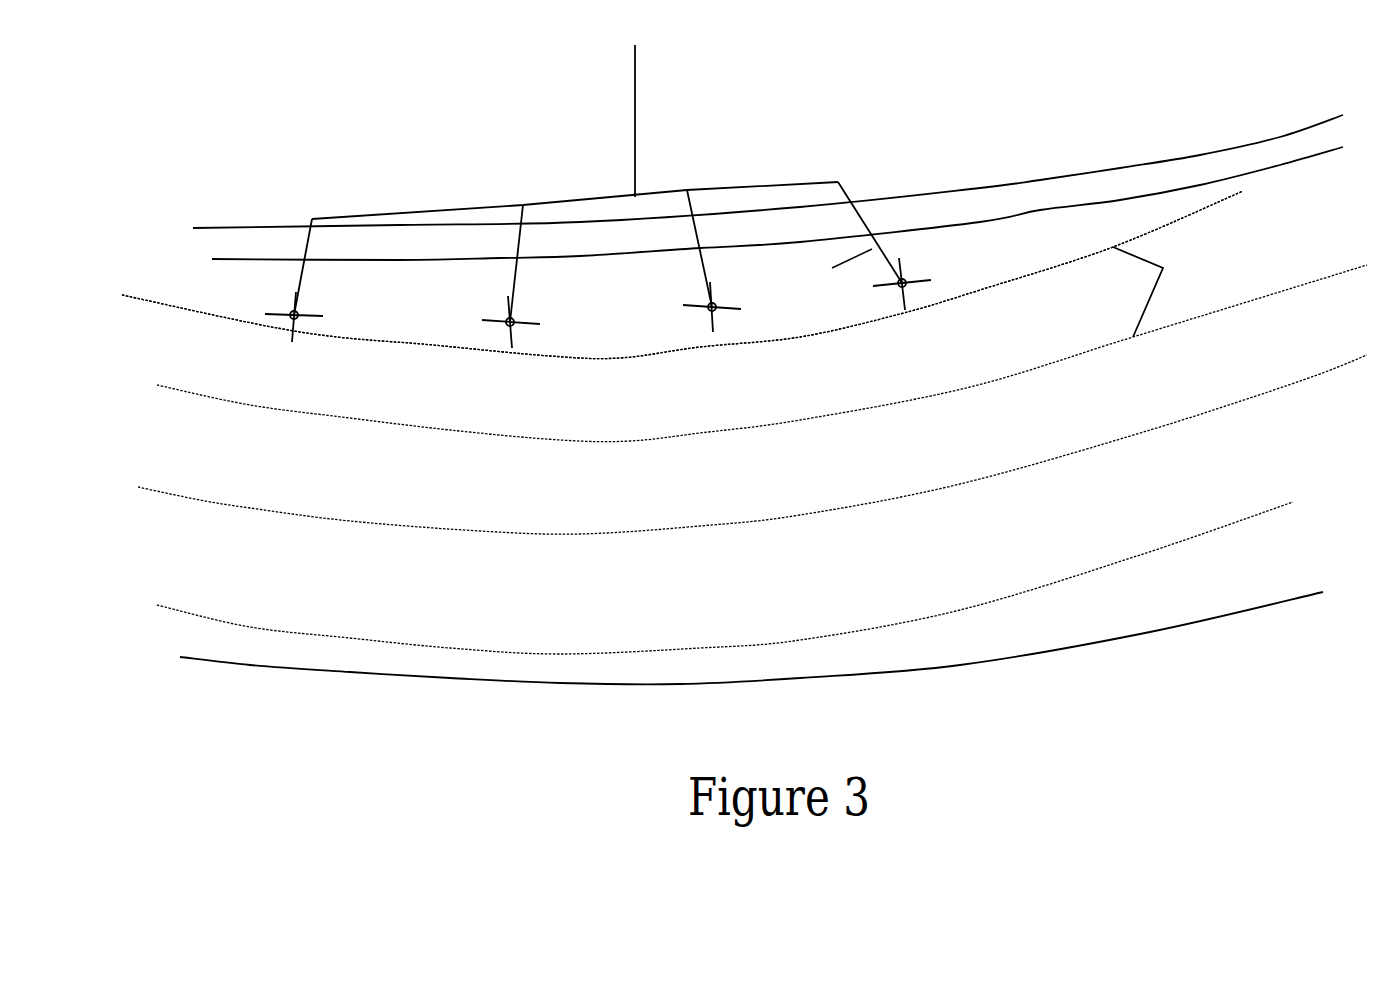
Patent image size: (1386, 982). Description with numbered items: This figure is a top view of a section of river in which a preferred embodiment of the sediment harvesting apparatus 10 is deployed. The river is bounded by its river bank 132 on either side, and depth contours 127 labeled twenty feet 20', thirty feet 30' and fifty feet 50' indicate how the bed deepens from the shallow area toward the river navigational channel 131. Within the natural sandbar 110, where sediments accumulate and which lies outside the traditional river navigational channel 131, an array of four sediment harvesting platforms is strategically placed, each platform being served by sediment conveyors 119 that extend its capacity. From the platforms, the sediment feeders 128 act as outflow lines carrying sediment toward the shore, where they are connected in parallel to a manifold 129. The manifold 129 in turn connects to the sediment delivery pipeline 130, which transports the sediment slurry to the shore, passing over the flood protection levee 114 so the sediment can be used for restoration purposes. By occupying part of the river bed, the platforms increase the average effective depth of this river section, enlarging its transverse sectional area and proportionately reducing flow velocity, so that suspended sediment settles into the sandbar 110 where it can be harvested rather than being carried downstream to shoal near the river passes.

The sediment harvesting apparatus 10 is at (706, 305).
The sandbar 110 is at (682, 280).
The flood protection levee 114 is at (768, 171).
The sediment conveyors 119 is at (713, 332).
The depth contours 127 is at (1161, 292).
The sediment feeders 128 is at (700, 265).
The manifold 129 is at (497, 205).
The delivery pipeline 130 is at (637, 86).
The river navigational channel 131 is at (725, 578).
The river bank 132 is at (1102, 640).
The contour line 20' is at (682, 275).
The contour line 30' is at (762, 353).
The contour line 50' is at (752, 444).